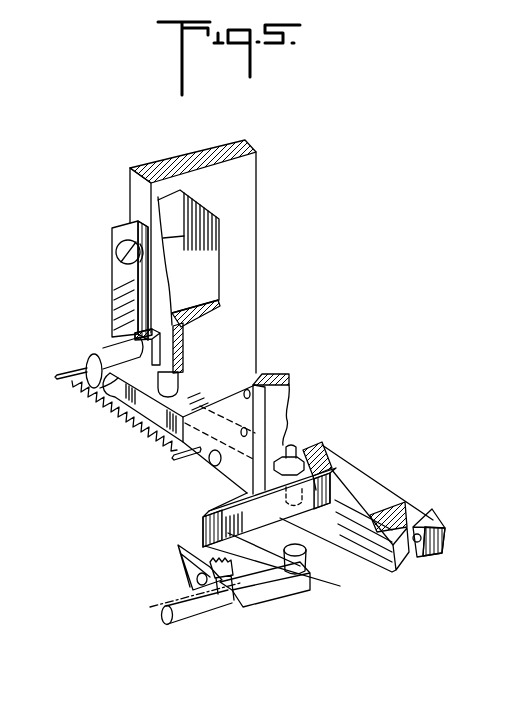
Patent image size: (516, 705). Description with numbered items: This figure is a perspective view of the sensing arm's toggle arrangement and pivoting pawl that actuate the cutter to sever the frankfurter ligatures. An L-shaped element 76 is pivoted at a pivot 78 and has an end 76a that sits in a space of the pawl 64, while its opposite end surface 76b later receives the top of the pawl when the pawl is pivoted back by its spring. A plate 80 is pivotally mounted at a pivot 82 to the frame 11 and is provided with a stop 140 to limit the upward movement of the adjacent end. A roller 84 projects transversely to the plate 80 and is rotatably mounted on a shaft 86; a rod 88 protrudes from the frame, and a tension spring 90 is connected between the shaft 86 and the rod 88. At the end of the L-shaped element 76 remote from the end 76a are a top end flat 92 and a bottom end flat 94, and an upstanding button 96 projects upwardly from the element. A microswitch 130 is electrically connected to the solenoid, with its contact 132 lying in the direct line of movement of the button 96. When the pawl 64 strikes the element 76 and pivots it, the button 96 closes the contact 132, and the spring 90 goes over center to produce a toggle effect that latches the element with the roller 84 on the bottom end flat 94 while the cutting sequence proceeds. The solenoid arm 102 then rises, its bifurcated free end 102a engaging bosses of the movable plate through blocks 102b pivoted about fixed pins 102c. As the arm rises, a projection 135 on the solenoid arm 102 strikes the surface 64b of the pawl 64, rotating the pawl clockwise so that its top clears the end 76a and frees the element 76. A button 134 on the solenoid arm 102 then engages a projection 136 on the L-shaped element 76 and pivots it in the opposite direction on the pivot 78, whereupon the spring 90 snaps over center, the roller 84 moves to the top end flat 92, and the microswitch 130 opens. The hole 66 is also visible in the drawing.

The frame 11 is at (245, 194).
The microswitch 130 is at (206, 268).
The plate 80 is at (120, 279).
The pivot 82 is at (116, 252).
The stop 140 is at (150, 333).
The roller 84 is at (97, 353).
The top end flat 92 is at (106, 366).
The shaft 86 is at (72, 372).
The contact 132 is at (184, 355).
The upstanding button 96 is at (178, 378).
The L-shaped element 76 is at (178, 390).
The pivot 78 is at (207, 459).
The rod 88 is at (172, 458).
The tension spring 90 is at (112, 415).
The bottom end flat 94 is at (108, 393).
The end surface 76b is at (228, 512).
The end 76a is at (190, 516).
The projection 136 is at (330, 483).
The solenoid arm 102 is at (333, 462).
The free end 102a is at (375, 552).
The blocks 102b is at (410, 567).
The fixed pins 102c is at (420, 530).
The button 134 is at (280, 592).
The pawl 64 is at (180, 543).
The surface 64b is at (178, 558).
The hole 66 is at (196, 580).
The projection 135 is at (182, 603).